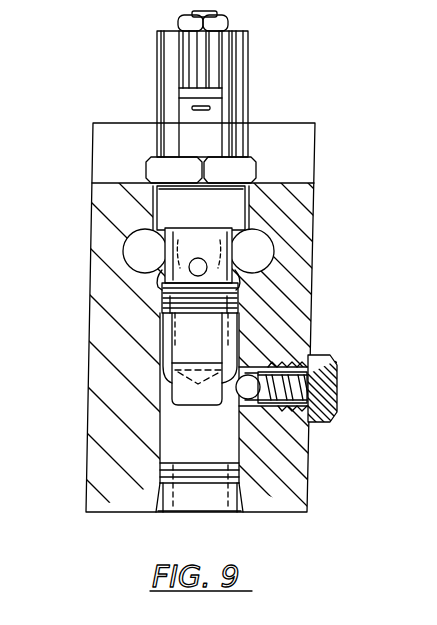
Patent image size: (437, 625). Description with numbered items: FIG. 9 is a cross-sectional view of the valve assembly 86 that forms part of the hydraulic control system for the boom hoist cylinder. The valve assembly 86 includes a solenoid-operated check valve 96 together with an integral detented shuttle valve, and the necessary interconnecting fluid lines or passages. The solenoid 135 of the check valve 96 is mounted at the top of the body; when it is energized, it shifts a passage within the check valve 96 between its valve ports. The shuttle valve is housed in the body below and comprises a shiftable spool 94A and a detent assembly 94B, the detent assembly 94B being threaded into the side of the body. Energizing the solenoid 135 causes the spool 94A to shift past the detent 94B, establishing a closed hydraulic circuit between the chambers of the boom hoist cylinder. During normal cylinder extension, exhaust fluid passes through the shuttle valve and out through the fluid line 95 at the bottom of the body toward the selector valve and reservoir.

The valve assembly 86 is at (92, 200).
The solenoid-operated check valve 96 is at (246, 207).
The solenoid 135 is at (157, 54).
The shiftable spool 94A is at (175, 329).
The detent assembly 94B is at (340, 373).
The fluid line 95 is at (199, 513).